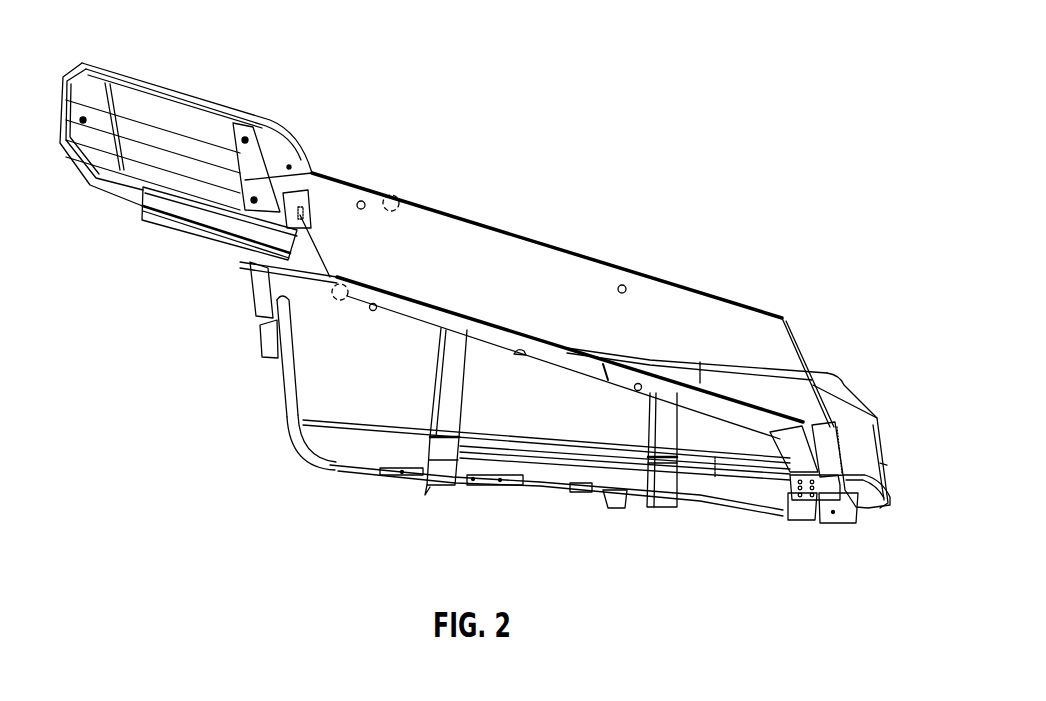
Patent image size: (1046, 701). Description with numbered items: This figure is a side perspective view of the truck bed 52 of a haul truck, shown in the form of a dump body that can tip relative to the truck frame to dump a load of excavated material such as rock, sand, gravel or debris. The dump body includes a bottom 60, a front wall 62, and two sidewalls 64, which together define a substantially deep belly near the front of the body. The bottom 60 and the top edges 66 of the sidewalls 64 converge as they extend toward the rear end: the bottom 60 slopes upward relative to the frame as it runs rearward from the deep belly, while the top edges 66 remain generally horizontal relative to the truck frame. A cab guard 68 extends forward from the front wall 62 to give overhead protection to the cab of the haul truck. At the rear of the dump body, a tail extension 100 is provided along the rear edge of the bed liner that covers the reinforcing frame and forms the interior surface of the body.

The truck bed 52 is at (588, 243).
The bottom 60 is at (372, 488).
The front wall 62 is at (245, 343).
The sidewalls 64 is at (532, 299).
The top edges 66 is at (396, 196).
The cab guard 68 is at (178, 140).
The tail extension 100 is at (862, 393).